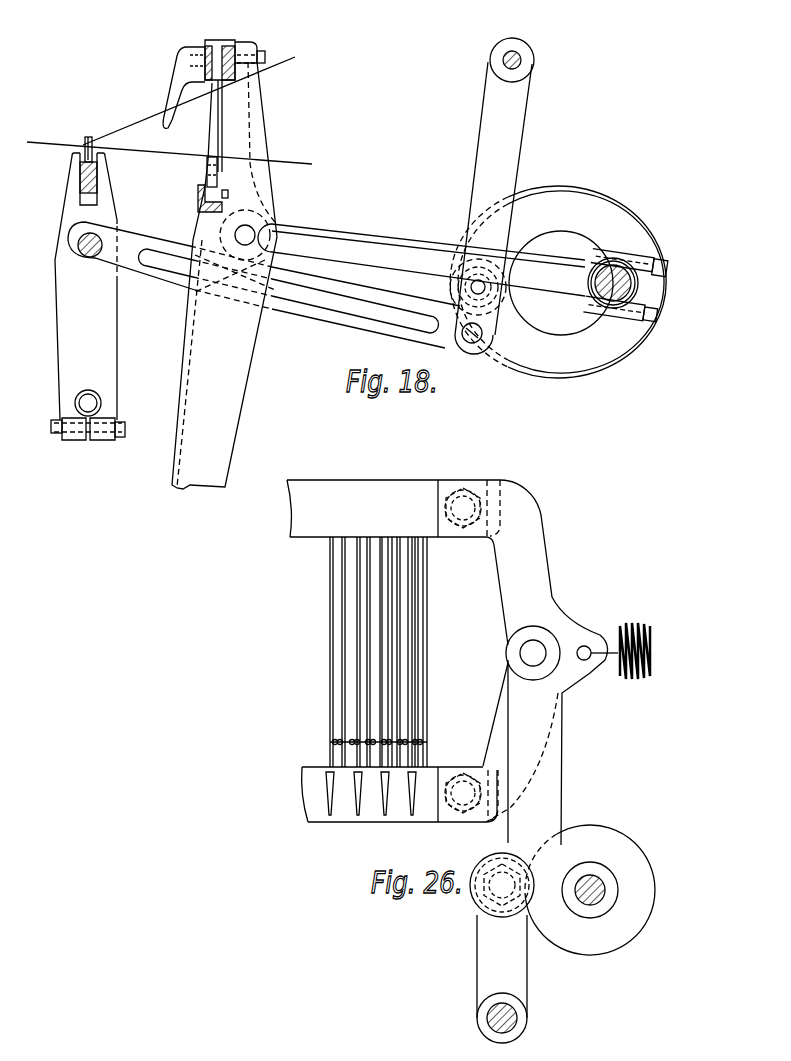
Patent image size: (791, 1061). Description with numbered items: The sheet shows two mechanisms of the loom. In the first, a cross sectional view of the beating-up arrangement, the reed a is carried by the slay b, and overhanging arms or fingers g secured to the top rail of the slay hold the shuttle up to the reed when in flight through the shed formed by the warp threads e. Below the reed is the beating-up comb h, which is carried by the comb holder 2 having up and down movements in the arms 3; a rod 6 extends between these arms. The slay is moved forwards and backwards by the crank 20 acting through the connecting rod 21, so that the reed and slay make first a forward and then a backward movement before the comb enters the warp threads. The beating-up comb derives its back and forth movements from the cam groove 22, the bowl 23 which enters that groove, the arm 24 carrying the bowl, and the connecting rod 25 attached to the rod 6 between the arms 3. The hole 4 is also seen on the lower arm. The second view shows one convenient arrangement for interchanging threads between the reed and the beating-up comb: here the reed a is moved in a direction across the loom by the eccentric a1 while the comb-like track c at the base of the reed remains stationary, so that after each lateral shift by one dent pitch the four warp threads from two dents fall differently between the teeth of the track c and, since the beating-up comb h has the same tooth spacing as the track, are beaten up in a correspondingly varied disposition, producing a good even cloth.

In FIG. 18, the overhanging arms or fingers g is at (175, 86).
In FIG. 18, the beating-up comb h is at (88, 136).
In FIG. 26, the beating-up comb h is at (360, 814).
In FIG. 18, the warp threads e is at (169, 110).
In FIG. 18, the comb holder 2 is at (82, 183).
In FIG. 18, the rod 6 is at (77, 243).
In FIG. 18, the reed a is at (220, 153).
In FIG. 26, the reed a is at (427, 653).
In FIG. 18, the slay b is at (264, 201).
In FIG. 18, the arms 3 is at (88, 296).
In FIG. 18, the hole 4 is at (99, 401).
In FIG. 18, the connecting rod 21 is at (374, 254).
In FIG. 18, the bowl 23 is at (473, 262).
In FIG. 18, the connecting rod 25 is at (350, 315).
In FIG. 18, the arm 24 is at (492, 153).
In FIG. 18, the cam groove 22 is at (540, 360).
In FIG. 18, the crank 20 is at (621, 316).
In FIG. 26, the comb-like track c is at (330, 744).
In FIG. 26, the eccentric a1 is at (612, 853).